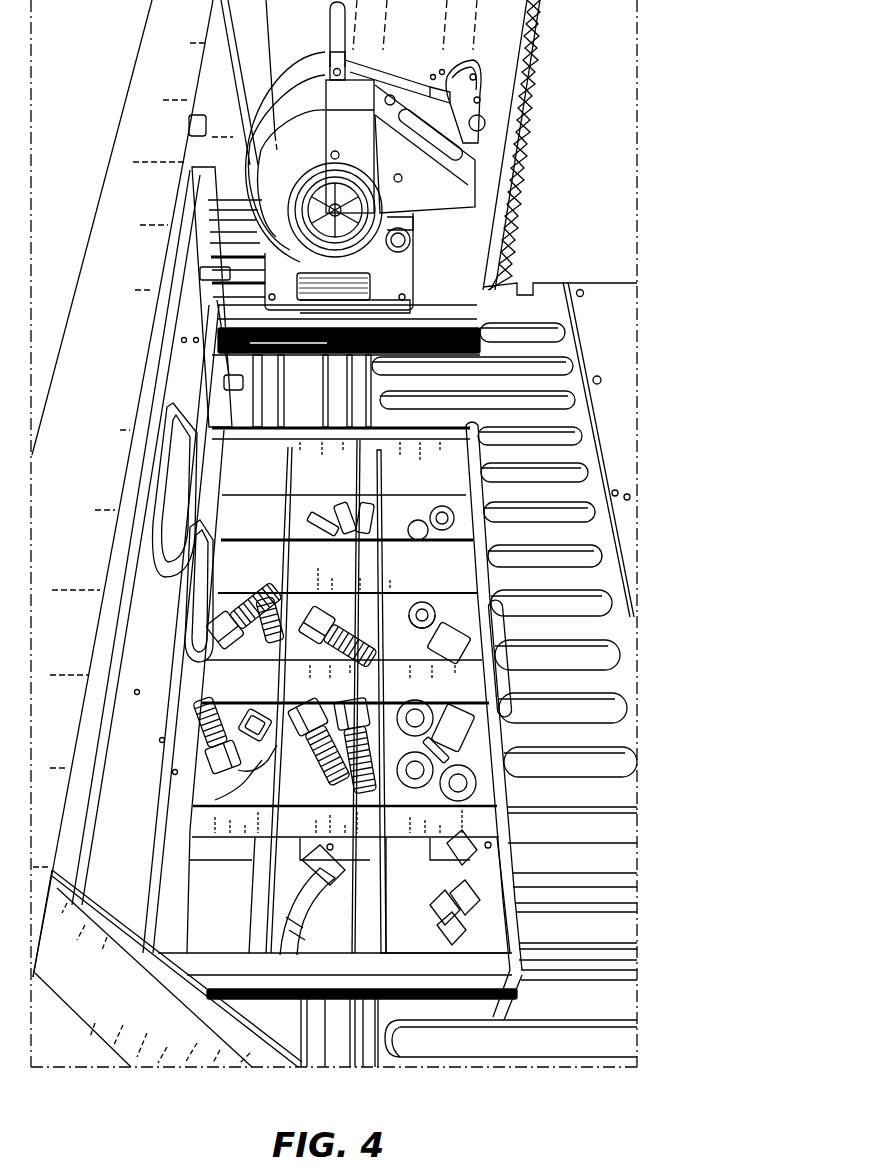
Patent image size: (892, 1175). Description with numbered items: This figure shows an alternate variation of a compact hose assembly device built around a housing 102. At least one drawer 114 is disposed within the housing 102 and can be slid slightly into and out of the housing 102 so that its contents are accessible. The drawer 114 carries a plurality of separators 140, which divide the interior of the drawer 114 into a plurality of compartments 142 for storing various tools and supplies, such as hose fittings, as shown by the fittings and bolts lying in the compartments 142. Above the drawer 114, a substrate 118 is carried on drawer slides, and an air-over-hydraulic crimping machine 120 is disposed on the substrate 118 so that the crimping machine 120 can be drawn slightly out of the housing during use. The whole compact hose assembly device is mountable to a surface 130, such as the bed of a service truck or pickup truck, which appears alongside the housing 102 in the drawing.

The housing 102 is at (143, 52).
The drawer 114 is at (513, 963).
The substrate 118 is at (455, 310).
The air-over-hydraulic crimping machine 120 is at (470, 170).
The surface 130 is at (595, 550).
The separators 140 is at (447, 677).
The compartments 142 is at (427, 888).